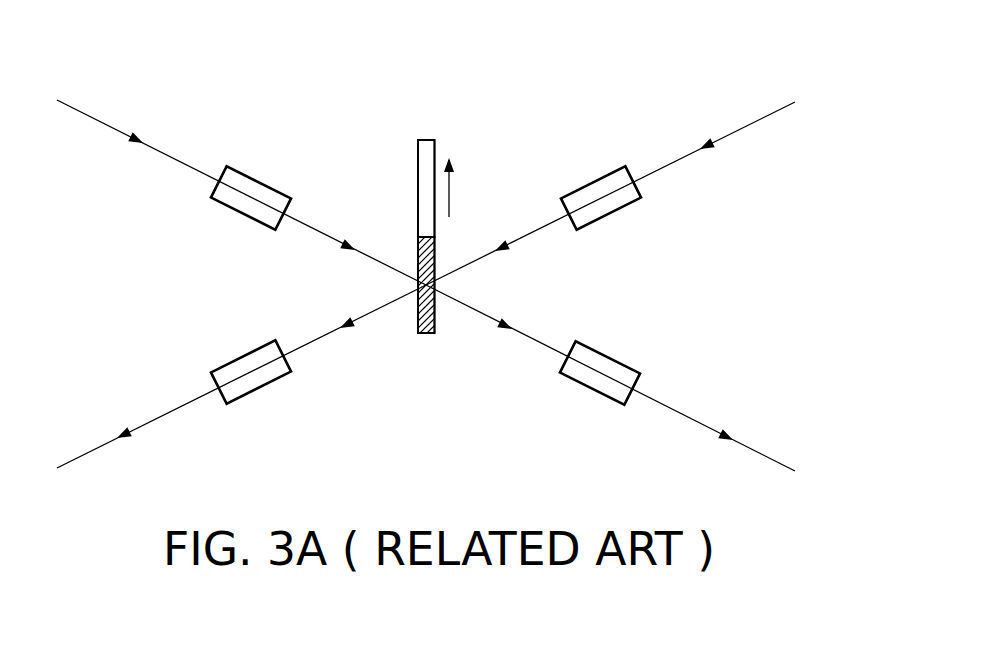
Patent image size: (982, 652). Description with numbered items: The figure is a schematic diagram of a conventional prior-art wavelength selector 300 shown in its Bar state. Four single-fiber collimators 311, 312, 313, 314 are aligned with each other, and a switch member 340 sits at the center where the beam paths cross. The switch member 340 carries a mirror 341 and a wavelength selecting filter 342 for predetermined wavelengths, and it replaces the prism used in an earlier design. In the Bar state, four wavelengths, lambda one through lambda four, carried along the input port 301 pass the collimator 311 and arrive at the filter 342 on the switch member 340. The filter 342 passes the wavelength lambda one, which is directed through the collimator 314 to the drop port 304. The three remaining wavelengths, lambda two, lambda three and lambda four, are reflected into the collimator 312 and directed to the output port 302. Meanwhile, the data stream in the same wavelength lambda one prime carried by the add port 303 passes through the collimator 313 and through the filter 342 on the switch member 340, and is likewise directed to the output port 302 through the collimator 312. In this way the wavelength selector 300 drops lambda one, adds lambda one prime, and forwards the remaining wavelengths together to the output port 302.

The wavelength selector 300 is at (107, 32).
The input port 301 is at (118, 132).
The output port 302 is at (150, 420).
The add port 303 is at (733, 135).
The drop port 304 is at (698, 420).
The collimator 311 is at (242, 217).
The collimator 312 is at (242, 353).
The collimator 313 is at (610, 218).
The collimator 314 is at (612, 353).
The switch member 340 is at (389, 233).
The mirror 341 is at (420, 180).
The filter 342 is at (425, 333).